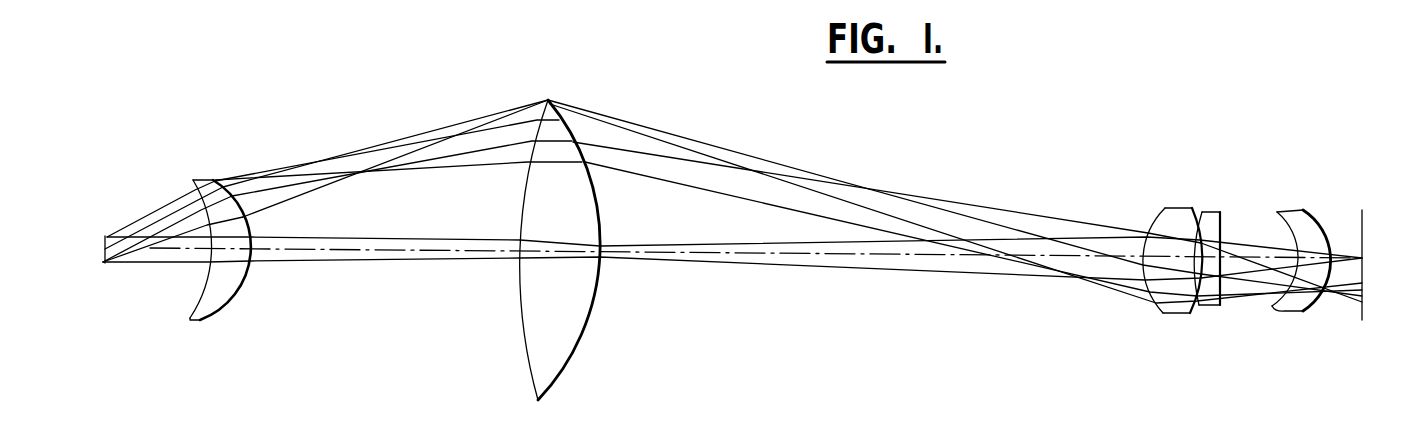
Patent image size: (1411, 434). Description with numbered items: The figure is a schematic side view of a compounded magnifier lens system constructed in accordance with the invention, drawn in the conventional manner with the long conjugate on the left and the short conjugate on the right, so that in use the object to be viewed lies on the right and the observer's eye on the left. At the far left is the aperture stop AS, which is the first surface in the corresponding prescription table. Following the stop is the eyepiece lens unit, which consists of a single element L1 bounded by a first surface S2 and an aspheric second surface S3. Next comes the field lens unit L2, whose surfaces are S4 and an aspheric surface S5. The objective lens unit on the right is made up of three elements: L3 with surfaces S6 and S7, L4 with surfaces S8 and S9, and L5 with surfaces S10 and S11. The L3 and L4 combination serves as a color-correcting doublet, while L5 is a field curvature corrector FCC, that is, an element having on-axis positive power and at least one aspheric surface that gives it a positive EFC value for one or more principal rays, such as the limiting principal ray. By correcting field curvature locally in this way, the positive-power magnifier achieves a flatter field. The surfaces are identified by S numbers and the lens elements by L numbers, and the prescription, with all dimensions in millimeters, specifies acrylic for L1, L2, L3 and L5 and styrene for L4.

The aperture stop AS is at (106, 237).
The eyepiece lens unit L1 is at (211, 236).
The field lens unit L2 is at (563, 227).
The objective lens element L3 is at (1148, 269).
The objective lens element L4 is at (1221, 270).
The field curvature corrector L5 is at (1324, 261).
The surface 2 S2 is at (198, 290).
The surface 3 S3 is at (229, 304).
The surface 4 S4 is at (522, 330).
The surface 5 S5 is at (587, 333).
The surface 6 S6 is at (1133, 292).
The surface 7 S7 is at (1192, 310).
The surface 8 S8 is at (1203, 290).
The surface 9 S9 is at (1223, 287).
The surface 10 S10 is at (1283, 286).
The surface 11 S11 is at (1328, 293).
The field curvature corrector FCC is at (1310, 231).